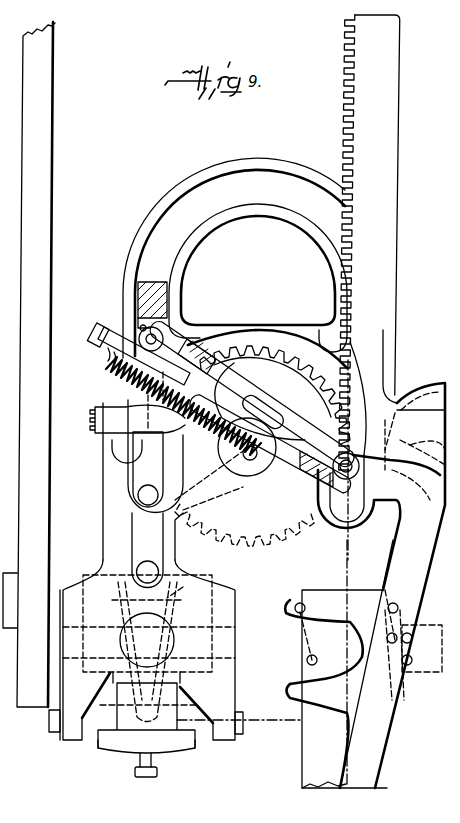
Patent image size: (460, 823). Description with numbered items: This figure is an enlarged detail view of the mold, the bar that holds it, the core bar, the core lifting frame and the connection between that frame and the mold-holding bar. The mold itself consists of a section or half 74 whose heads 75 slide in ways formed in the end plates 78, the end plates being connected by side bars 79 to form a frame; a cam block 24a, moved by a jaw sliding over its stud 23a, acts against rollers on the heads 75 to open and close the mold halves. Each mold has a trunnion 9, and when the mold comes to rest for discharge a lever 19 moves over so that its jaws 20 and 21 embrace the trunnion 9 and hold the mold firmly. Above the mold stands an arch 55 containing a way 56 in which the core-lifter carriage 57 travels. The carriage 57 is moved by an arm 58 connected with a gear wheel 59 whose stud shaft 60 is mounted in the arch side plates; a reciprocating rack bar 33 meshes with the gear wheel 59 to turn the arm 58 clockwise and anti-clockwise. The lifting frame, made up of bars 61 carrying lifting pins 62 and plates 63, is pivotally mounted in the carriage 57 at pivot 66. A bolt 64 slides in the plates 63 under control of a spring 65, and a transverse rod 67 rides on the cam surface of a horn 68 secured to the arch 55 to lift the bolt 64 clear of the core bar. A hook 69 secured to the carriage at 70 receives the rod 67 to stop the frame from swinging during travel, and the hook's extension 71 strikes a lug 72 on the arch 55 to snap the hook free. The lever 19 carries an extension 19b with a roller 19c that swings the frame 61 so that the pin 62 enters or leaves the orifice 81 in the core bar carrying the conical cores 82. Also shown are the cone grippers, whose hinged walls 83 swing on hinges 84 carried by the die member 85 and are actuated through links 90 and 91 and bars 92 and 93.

The trunnion 9 is at (137, 647).
The lever 19 is at (367, 762).
The extension 19b is at (428, 452).
The roller 19c is at (395, 447).
The jaw 20 is at (287, 600).
The jaw 21 is at (295, 690).
The stud 23a is at (135, 773).
The cam block 24a is at (183, 752).
The rack bar 33 is at (400, 104).
The arch 55 is at (283, 166).
The way 56 is at (293, 212).
The carriage 57 is at (140, 287).
The arm 58 is at (128, 483).
The gear wheel 59 is at (262, 350).
The stud shaft 60 is at (257, 474).
The bar 61 is at (168, 333).
The pin 62 is at (313, 455).
The plate 63 is at (205, 345).
The bolt 64 is at (97, 342).
The spring 65 is at (118, 367).
The pivot 66 is at (162, 329).
The transverse rod 67 is at (242, 340).
The horn 68 is at (92, 419).
The hook 69 is at (112, 449).
The hook pivot 70 is at (121, 400).
The extension 71 is at (116, 340).
The lug 72 is at (108, 370).
The mold section 74 is at (224, 590).
The head 75 is at (215, 612).
The end plate 78 is at (96, 568).
The side bar 79 is at (238, 736).
The orifice 81 is at (103, 531).
The conical core 82 is at (200, 566).
The gripper wall 83 is at (309, 638).
The hinge 84 is at (298, 614).
The die member 85 is at (301, 600).
The link 90 is at (436, 627).
The link 91 is at (434, 675).
The bar 92 is at (395, 600).
The bar 93 is at (398, 694).